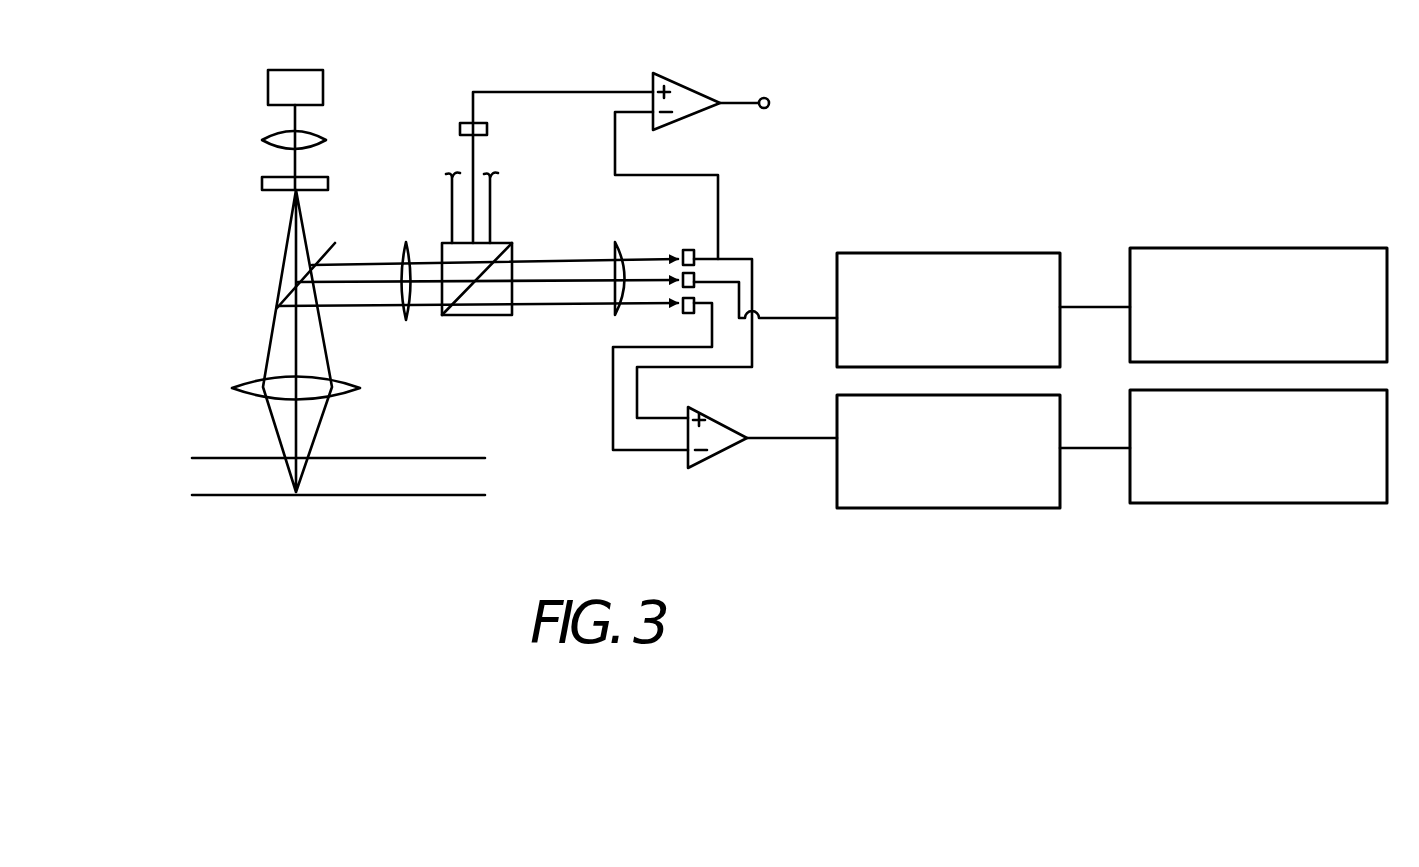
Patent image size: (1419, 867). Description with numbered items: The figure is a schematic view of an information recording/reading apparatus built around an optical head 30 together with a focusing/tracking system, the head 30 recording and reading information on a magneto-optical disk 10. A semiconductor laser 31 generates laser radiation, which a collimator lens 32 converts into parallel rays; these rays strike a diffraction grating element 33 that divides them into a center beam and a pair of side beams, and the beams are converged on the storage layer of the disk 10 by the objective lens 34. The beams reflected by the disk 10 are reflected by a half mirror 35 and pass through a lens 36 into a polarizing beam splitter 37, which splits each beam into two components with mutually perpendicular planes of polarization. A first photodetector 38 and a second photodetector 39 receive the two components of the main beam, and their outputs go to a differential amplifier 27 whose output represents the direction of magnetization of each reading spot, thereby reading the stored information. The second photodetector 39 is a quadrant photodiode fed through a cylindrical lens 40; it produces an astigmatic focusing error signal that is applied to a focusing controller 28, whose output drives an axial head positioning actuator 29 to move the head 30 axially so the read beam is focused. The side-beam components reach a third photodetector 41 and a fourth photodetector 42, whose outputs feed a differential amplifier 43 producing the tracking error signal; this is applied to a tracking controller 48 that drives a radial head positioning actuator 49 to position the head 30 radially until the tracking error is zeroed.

The magneto-optical disk 10 is at (186, 469).
The differential amplifier 27 is at (690, 95).
The focusing controller 28 is at (941, 253).
The axial head positioning actuator 29 is at (1246, 250).
The optical head 30 is at (140, 134).
The semiconductor laser 31 is at (268, 89).
The collimator lens 32 is at (268, 140).
The diffraction grating element 33 is at (262, 183).
The objective lens 34 is at (252, 386).
The half mirror 35 is at (272, 312).
The lens 36 is at (404, 243).
The polarizing beam splitter 37 is at (475, 316).
The first photodetector 38 is at (488, 130).
The second photodetector 39 is at (698, 284).
The cylindrical lens 40 is at (618, 243).
The third photodetector 41 is at (686, 250).
The fourth photodetector 42 is at (682, 311).
The differential amplifier 43 is at (713, 456).
The tracking controller 48 is at (950, 508).
The radial head positioning actuator 49 is at (1265, 503).